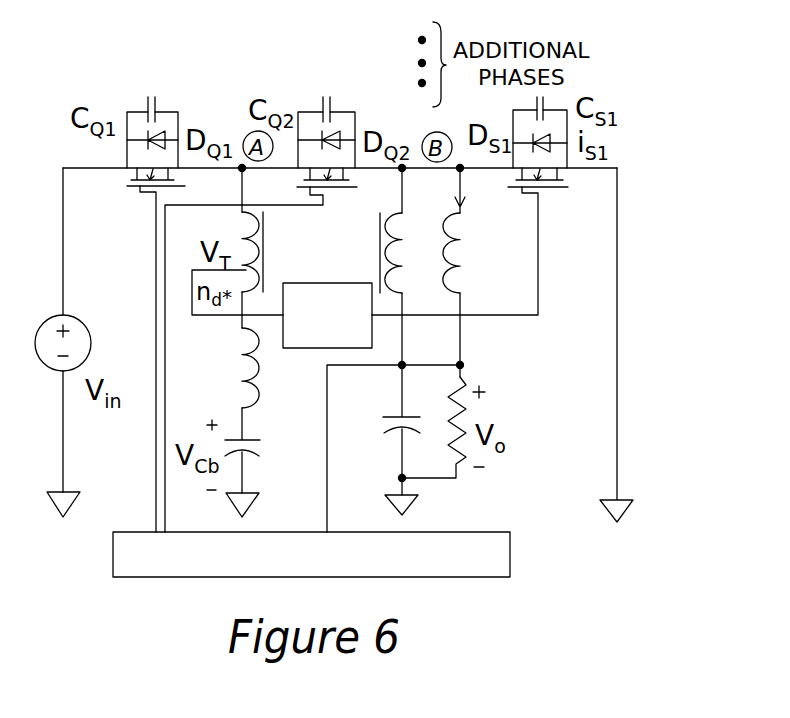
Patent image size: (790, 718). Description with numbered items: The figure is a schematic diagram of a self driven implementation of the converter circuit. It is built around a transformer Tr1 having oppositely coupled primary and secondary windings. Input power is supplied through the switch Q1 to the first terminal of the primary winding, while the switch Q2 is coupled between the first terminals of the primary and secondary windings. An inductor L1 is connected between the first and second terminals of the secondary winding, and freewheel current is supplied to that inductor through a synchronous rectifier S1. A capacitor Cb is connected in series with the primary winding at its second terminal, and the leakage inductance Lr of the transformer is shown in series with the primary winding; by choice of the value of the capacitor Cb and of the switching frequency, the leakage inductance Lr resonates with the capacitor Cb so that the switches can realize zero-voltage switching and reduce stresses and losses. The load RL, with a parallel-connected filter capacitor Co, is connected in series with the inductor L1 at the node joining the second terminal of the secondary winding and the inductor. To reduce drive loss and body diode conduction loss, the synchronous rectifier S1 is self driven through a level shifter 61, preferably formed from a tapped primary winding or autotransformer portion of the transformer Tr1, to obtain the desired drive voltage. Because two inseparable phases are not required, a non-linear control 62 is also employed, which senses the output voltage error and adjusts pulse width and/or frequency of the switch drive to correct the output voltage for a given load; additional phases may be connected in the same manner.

The level shifter 61 is at (310, 348).
The non-linear control 62 is at (510, 550).
The switch Q1 is at (180, 182).
The switch Q2 is at (334, 194).
The synchronous rectifier S1 is at (552, 196).
The transformer Tr1 is at (330, 252).
The inductor L1 is at (473, 230).
The leakage inductance Lr is at (228, 396).
The capacitor Cb is at (261, 450).
The filter capacitor Co is at (387, 394).
The load RL is at (434, 427).